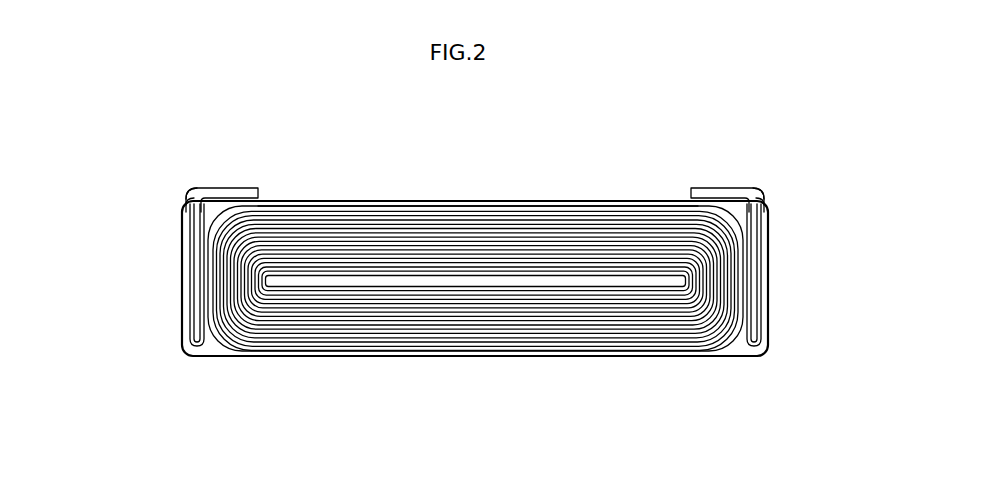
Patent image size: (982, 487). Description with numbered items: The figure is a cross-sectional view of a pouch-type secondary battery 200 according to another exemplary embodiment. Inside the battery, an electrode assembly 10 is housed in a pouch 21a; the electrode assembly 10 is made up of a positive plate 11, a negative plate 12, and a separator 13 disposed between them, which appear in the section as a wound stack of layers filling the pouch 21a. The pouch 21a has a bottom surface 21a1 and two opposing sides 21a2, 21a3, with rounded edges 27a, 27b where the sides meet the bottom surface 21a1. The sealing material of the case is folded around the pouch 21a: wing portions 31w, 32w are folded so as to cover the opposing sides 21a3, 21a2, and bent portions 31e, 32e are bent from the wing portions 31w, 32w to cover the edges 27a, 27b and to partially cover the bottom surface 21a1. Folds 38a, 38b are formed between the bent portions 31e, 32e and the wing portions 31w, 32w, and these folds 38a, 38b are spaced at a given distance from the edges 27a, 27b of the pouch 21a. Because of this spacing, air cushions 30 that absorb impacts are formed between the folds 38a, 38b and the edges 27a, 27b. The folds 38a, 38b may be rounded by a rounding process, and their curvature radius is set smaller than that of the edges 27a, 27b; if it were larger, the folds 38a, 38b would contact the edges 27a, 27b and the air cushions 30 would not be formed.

The pouch-type secondary battery 200 is at (86, 103).
The electrode assembly 10 is at (428, 122).
The positive plate 11 is at (321, 196).
The negative plate 12 is at (420, 197).
The separator 13 is at (358, 197).
The pouch 21a is at (204, 352).
The bottom surface of the pouch 21a1 is at (523, 197).
The side of the pouch 21a2 is at (740, 318).
The side of the pouch 21a3 is at (188, 318).
The edge of the pouch 27a is at (181, 200).
The edge of the pouch 27b is at (742, 198).
The air cushion 30 is at (176, 194).
The bent portion 31e is at (231, 179).
The wing portion 31w is at (178, 286).
The bent portion 32e is at (720, 178).
The wing portion 32w is at (760, 278).
The fold 38a is at (198, 178).
The fold 38b is at (758, 199).